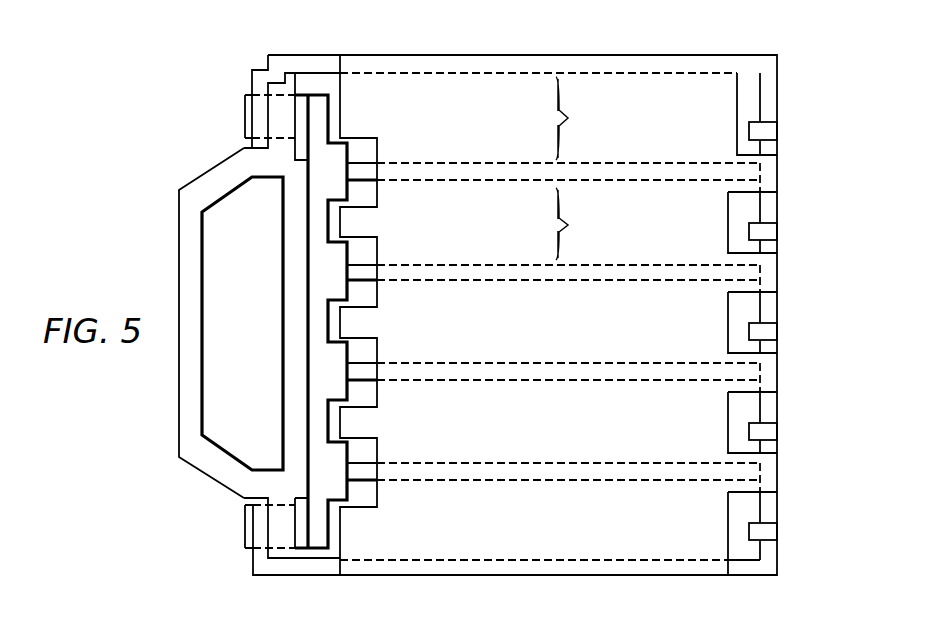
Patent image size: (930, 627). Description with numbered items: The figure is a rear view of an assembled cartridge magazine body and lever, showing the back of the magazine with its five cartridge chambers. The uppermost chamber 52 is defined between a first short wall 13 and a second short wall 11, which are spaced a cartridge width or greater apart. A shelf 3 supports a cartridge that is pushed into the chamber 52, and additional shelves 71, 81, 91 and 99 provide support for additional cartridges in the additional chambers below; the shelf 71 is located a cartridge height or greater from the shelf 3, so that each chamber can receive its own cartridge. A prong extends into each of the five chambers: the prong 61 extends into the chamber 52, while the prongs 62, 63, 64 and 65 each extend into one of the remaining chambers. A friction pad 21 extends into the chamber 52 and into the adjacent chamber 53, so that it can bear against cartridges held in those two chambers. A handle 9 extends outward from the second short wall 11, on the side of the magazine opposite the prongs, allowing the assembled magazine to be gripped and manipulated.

The second short wall 11 is at (340, 87).
The friction pad 21 is at (363, 140).
The handle 9 is at (180, 266).
The shelf 3 is at (467, 163).
The shelf 71 is at (467, 265).
The shelf 81 is at (467, 363).
The shelf 91 is at (467, 463).
The shelf 99 is at (467, 560).
The chamber 52 is at (580, 118).
The chamber 53 is at (580, 224).
The first short wall 13 is at (777, 95).
The prong 61 is at (770, 132).
The prong 62 is at (770, 232).
The prong 63 is at (770, 332).
The prong 64 is at (770, 432).
The prong 65 is at (770, 532).